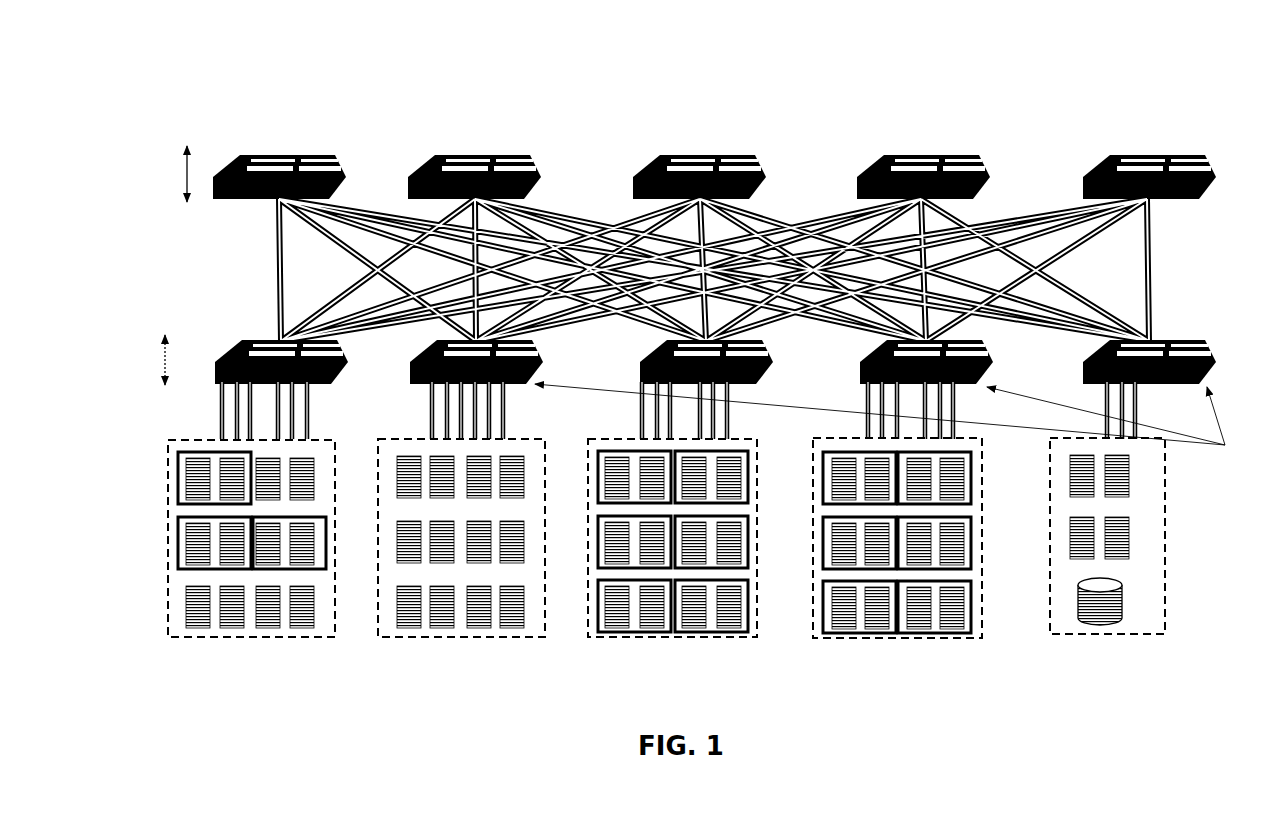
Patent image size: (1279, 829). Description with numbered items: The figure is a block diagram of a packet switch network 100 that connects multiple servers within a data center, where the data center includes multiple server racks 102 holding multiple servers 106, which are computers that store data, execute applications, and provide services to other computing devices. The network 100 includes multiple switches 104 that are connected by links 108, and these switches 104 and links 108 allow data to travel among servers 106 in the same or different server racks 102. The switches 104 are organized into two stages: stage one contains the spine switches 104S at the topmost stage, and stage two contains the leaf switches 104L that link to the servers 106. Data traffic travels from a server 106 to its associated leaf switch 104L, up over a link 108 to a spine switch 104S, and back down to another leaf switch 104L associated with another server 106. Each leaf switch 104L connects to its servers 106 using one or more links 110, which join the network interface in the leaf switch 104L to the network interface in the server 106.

The packet switch network 100 is at (1178, 92).
The server rack 102 is at (666, 563).
The switch 104 is at (1121, 156).
The spine switch 104S is at (962, 156).
The leaf switch 104L is at (216, 354).
The server 106 is at (302, 605).
The link 108 is at (395, 322).
The link 110 is at (641, 420).